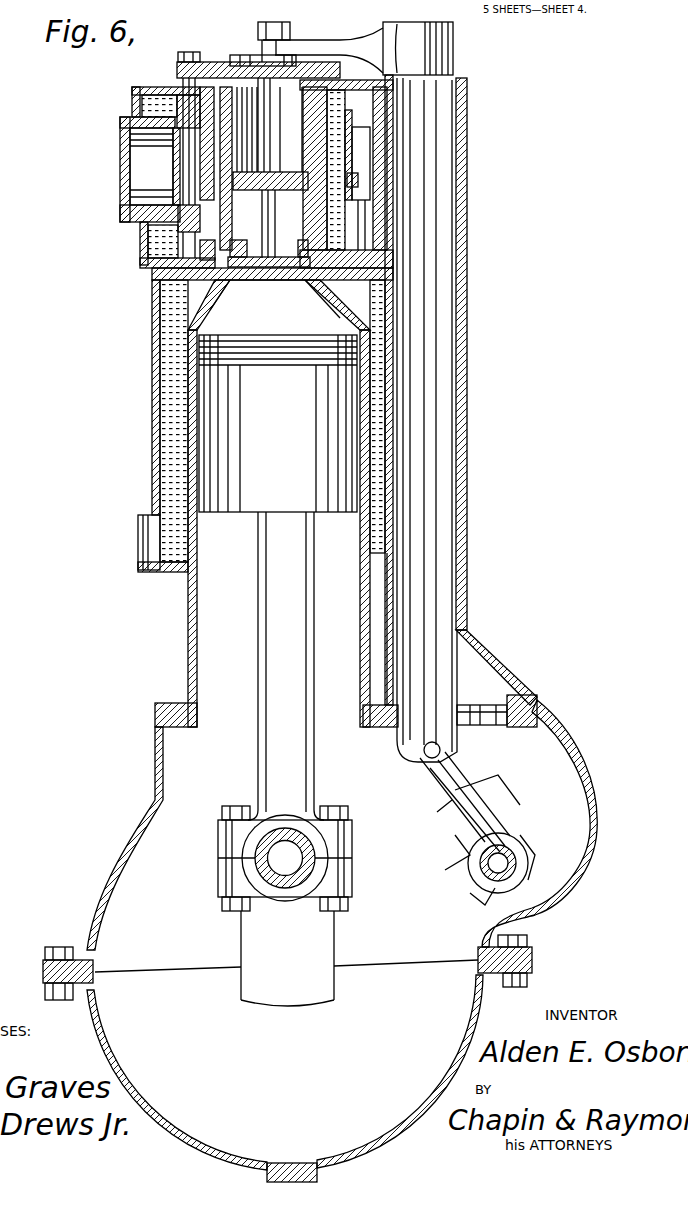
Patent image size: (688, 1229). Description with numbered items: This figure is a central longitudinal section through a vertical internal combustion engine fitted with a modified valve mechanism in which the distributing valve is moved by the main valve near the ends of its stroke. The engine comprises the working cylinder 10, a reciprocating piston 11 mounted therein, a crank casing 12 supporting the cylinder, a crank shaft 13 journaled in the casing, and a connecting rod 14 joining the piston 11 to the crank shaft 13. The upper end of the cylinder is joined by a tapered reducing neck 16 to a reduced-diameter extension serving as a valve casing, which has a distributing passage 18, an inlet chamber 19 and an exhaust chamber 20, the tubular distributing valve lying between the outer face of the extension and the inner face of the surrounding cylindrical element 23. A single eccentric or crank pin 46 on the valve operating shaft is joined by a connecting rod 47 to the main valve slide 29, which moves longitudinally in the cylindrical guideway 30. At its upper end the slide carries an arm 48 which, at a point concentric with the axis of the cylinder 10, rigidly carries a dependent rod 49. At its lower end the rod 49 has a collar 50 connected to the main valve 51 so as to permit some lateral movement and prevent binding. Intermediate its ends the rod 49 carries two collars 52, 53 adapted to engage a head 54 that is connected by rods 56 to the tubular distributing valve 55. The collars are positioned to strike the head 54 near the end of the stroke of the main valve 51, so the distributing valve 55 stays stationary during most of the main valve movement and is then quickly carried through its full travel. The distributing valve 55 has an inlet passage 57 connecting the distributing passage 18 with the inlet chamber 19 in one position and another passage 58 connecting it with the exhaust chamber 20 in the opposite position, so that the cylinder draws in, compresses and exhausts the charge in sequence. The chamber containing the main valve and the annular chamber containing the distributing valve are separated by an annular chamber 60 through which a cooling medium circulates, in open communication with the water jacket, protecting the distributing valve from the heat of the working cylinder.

The working cylinder 10 is at (197, 616).
The piston 11 is at (278, 423).
The crank casing 12 is at (153, 812).
The crank shaft 13 is at (325, 951).
The connecting rod 14 is at (286, 666).
The tapered reducing neck 16 is at (388, 105).
The distributing passage 18 is at (210, 219).
The inlet chamber 19 is at (150, 248).
The exhaust chamber 20 is at (137, 173).
The cylindrical element 23 is at (364, 160).
The main valve slide 29 is at (452, 432).
The cylindrical guideway 30 is at (466, 370).
The eccentric or crank pin 46 is at (520, 868).
The connecting rod 47 is at (458, 778).
The arm 48 is at (317, 43).
The dependent rod 49 is at (272, 124).
The collar 50 is at (280, 277).
The main valve 51 is at (260, 278).
The collar 52 is at (247, 62).
The collar 53 is at (293, 189).
The head 54 is at (229, 70).
The tubular distributing valve 55 is at (190, 233).
The rods 56 is at (177, 151).
The inlet passage 57 is at (187, 260).
The passage 58 is at (187, 200).
The annular chamber 60 is at (188, 148).